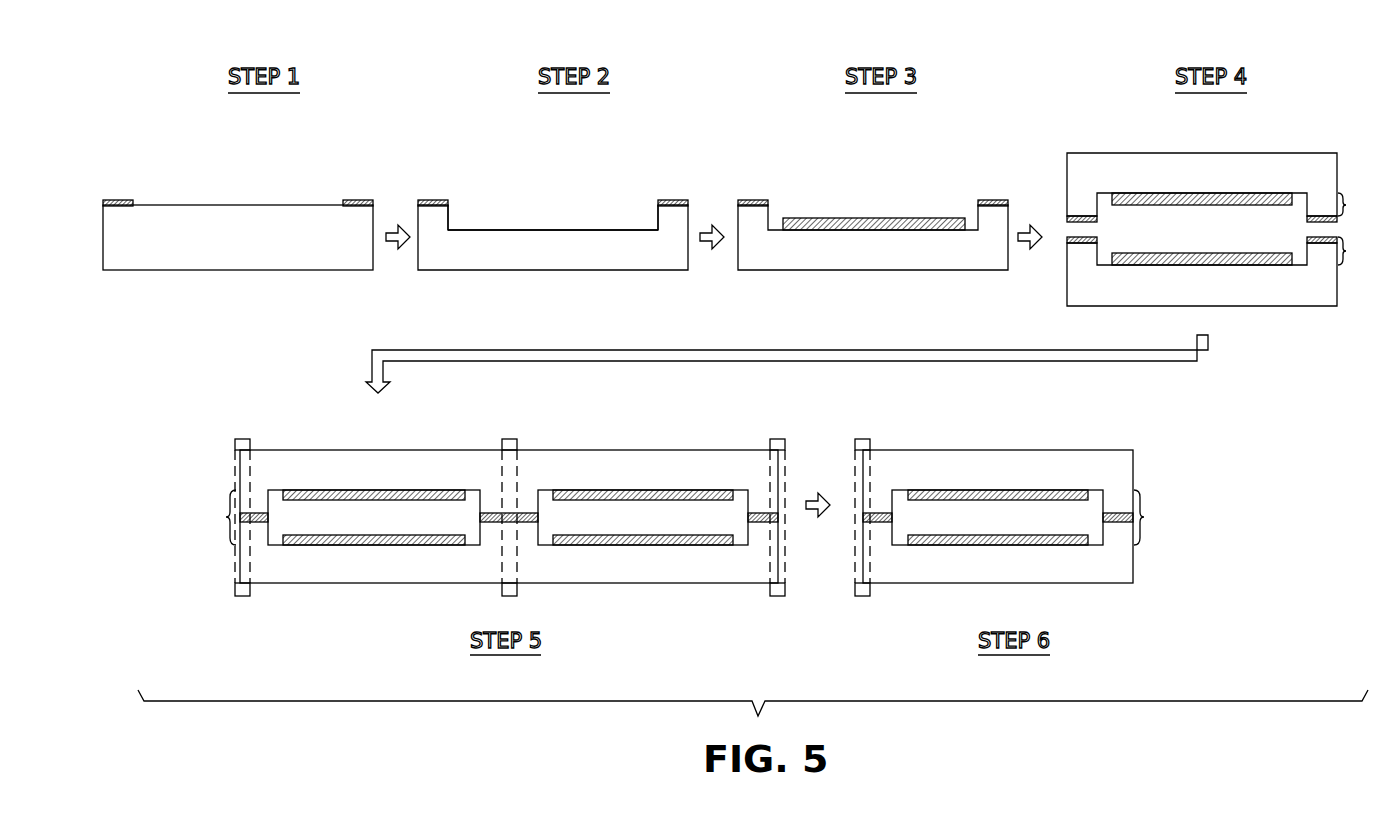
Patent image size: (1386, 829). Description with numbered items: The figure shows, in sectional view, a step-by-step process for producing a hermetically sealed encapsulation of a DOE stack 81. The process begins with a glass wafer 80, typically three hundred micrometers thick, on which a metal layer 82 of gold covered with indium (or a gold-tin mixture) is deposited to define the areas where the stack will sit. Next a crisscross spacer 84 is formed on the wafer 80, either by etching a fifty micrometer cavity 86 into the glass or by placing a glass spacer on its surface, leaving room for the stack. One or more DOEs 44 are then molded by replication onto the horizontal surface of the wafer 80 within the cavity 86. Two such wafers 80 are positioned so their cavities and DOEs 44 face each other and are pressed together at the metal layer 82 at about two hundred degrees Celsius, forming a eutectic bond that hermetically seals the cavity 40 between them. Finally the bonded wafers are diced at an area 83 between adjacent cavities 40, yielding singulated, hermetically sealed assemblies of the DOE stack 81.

The glass wafer 80 is at (208, 263).
The metal layer 82 is at (110, 199).
The spacer 84 is at (453, 217).
The cavity 86 is at (537, 222).
The DOE 44 is at (875, 222).
The cavity 40 is at (548, 510).
The area 83 is at (243, 439).
The DOE stack 81 is at (1162, 442).